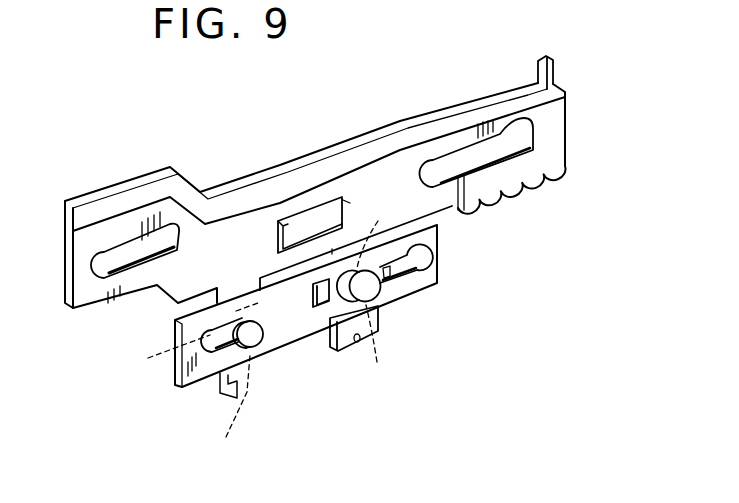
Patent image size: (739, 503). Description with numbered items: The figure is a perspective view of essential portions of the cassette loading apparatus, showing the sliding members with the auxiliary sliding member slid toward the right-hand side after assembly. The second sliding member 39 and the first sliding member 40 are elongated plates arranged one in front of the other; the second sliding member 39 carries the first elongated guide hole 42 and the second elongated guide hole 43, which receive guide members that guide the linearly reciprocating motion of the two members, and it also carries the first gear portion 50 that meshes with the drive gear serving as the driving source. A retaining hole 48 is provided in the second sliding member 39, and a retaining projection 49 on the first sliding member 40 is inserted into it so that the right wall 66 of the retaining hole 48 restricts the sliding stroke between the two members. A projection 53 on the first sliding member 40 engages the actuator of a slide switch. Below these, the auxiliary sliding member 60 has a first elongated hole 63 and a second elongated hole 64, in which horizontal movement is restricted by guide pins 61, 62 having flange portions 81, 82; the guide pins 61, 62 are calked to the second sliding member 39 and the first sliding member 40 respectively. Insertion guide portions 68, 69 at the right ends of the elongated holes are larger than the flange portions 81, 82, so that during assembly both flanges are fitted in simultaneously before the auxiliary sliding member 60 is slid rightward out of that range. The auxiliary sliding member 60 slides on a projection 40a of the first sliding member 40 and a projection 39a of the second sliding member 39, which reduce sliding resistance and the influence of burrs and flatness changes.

The second sliding member 39 is at (227, 237).
The projection 39a is at (179, 381).
The first sliding member 40 is at (128, 196).
The projection 40a is at (388, 296).
The first elongated guide hole 42 is at (130, 262).
The second elongated guide hole 43 is at (453, 160).
The retaining hole 48 is at (310, 218).
The retaining projection 49 is at (292, 206).
The first gear portion 50 is at (557, 172).
The projection 53 is at (552, 58).
The auxiliary sliding member 60 is at (432, 282).
The guide pin 61 is at (240, 352).
The guide pin 62 is at (375, 300).
The first elongated hole 63 is at (252, 349).
The second elongated hole 64 is at (408, 268).
The right wall 66 is at (352, 205).
The insertion guide portion 68 is at (317, 307).
The insertion guide portion 69 is at (432, 252).
The flange portion 81 is at (248, 348).
The flange portion 82 is at (333, 332).